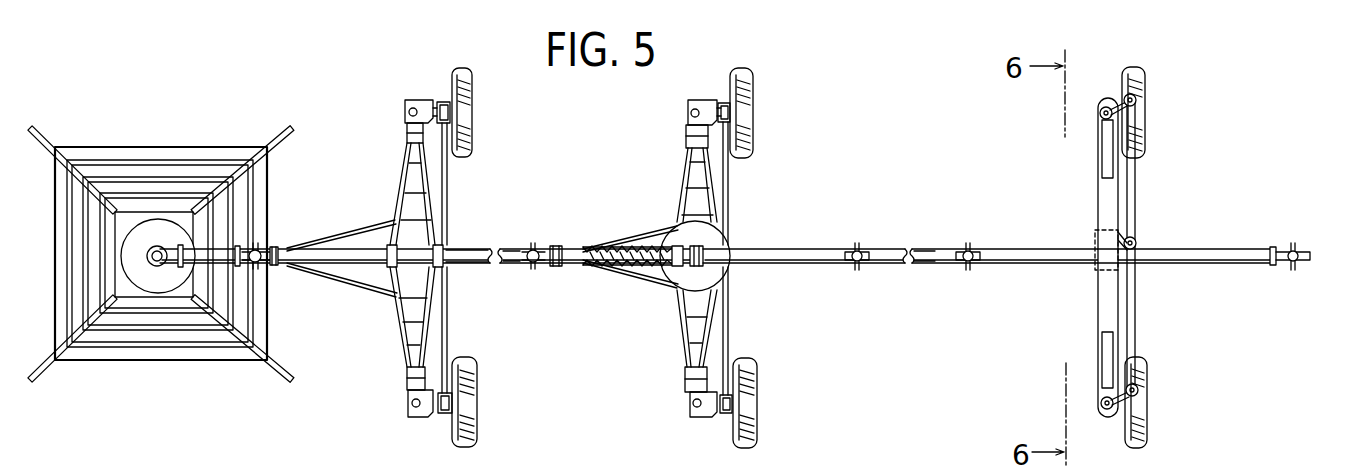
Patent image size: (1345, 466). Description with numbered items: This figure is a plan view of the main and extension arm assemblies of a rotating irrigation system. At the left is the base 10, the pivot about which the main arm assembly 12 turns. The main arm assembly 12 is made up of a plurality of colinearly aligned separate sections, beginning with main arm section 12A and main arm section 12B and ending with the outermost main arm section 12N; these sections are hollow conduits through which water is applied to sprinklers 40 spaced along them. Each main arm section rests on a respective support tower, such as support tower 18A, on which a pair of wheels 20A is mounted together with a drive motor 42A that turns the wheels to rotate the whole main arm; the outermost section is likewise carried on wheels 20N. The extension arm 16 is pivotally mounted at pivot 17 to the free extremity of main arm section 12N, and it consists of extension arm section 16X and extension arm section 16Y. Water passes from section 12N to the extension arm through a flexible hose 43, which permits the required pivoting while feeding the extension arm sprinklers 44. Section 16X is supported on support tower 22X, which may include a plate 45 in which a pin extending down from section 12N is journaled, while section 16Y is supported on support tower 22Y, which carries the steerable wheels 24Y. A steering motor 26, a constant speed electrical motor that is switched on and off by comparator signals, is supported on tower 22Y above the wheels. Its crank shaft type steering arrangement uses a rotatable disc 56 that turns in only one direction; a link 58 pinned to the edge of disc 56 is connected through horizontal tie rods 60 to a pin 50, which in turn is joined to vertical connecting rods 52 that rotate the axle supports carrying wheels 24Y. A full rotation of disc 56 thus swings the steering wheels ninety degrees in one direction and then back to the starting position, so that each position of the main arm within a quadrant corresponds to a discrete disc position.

The base 10 is at (154, 367).
The main arm assembly 12 is at (511, 216).
The main arm section 12A is at (351, 268).
The main arm section 12B is at (468, 267).
The outermost main arm section 12N is at (571, 279).
The extension arm 16 is at (926, 236).
The extension arm section 16X is at (798, 266).
The extension arm section 16Y is at (1177, 264).
The pivot 17 is at (616, 229).
The support tower 18A is at (432, 340).
The wheels 20A is at (468, 130).
The wheels 20N is at (752, 115).
The support tower 22X is at (720, 330).
The support tower 22Y is at (1097, 311).
The wheels 24Y is at (1140, 137).
The steering motor 26 is at (1095, 228).
The sprinklers 40 is at (262, 268).
The drive motor 42A is at (415, 280).
The flexible hose 43 is at (647, 266).
The sprinklers 44 is at (857, 272).
The plate 45 is at (662, 296).
The pin 50 is at (1136, 104).
The vertical connecting rods 52 is at (1100, 114).
The rotatable disc 56 is at (1123, 240).
The link 58 is at (1136, 242).
The horizontal tie rods 60 is at (1137, 322).